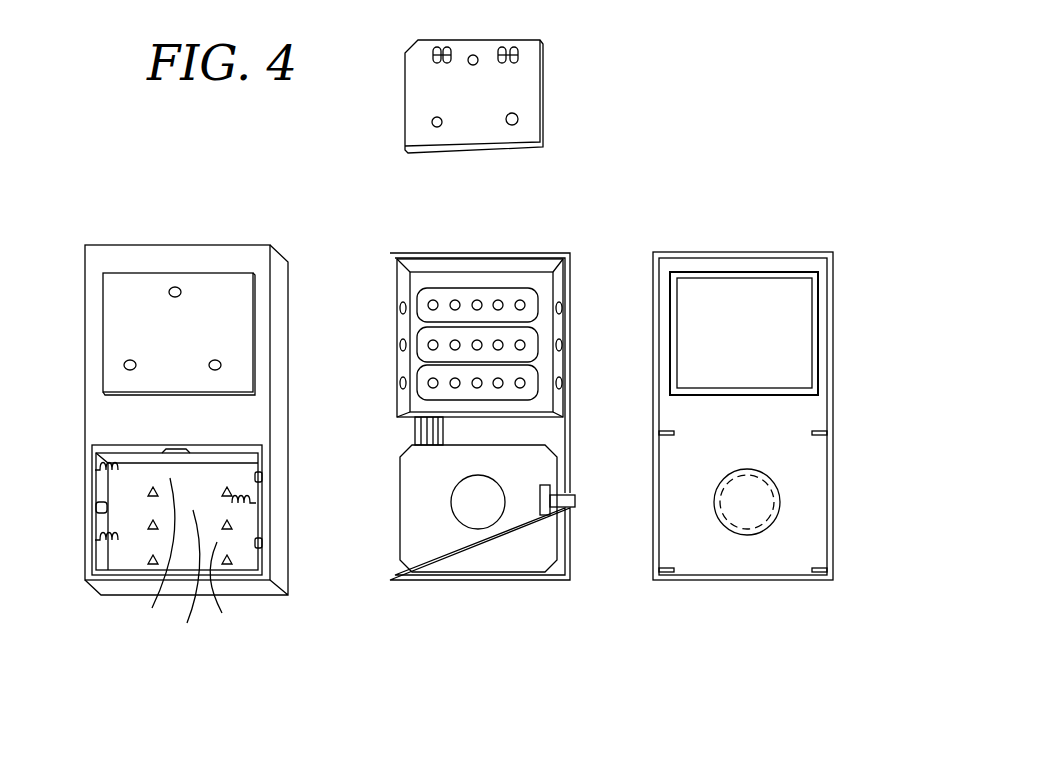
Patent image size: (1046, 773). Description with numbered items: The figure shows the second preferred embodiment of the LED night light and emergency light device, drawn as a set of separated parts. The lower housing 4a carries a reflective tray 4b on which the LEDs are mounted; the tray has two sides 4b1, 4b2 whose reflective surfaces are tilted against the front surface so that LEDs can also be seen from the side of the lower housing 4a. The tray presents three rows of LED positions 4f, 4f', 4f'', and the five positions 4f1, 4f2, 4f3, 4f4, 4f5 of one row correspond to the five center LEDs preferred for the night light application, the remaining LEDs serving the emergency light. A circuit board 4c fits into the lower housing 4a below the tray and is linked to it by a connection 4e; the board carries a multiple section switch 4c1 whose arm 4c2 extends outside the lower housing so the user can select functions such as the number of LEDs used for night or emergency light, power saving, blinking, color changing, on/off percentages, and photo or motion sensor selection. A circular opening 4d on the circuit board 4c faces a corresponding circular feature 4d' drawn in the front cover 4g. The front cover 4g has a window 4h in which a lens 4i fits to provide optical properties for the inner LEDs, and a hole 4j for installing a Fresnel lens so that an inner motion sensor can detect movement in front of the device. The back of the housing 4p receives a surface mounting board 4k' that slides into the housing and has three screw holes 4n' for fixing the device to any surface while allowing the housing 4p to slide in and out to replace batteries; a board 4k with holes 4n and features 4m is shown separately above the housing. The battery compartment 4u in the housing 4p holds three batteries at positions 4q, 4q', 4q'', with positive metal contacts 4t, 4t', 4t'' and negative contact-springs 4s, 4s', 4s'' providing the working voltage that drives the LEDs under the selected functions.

The lower housing 4a is at (567, 427).
The reflective tray 4b is at (417, 280).
The side of reflective tray 4b1 is at (558, 327).
The side of reflective tray 4b2 is at (403, 287).
The circuit board 4c is at (542, 470).
The multiple section switch 4c1 is at (547, 518).
The arm 4c2 is at (576, 502).
The circular aperture 4d is at (478, 545).
The aperture rim 4d' is at (745, 552).
The ribbon cable 4e is at (413, 430).
The first key row 4f is at (437, 305).
The second key row 4f' is at (437, 344).
The third key row 4f'' is at (437, 382).
The first key 4f1 is at (433, 300).
The second key 4f2 is at (455, 300).
The third key 4f3 is at (477, 300).
The fourth key 4f4 is at (498, 300).
The fifth key 4f5 is at (520, 300).
The front cover 4g is at (750, 268).
The window 4h is at (815, 322).
The lens 4i is at (793, 360).
The hole 4j is at (780, 497).
The circuit board 4k is at (499, 96).
The surface mounting board 4k' is at (149, 334).
The connector pads 4m is at (445, 50).
The mounting holes 4n is at (434, 91).
The screw holes 4n' is at (172, 289).
The housing 4p is at (112, 257).
The first battery slot 4q is at (153, 556).
The second battery slot 4q' is at (190, 582).
The third battery slot 4q'' is at (233, 589).
The negative contact-spring 4s is at (280, 503).
The negative contact-spring 4s' is at (78, 471).
The negative contact-spring 4s'' is at (78, 550).
The positive metal contact 4t is at (290, 469).
The positive metal contact 4t' is at (293, 550).
The positive metal contact 4t'' is at (69, 508).
The battery compartment 4u is at (120, 445).